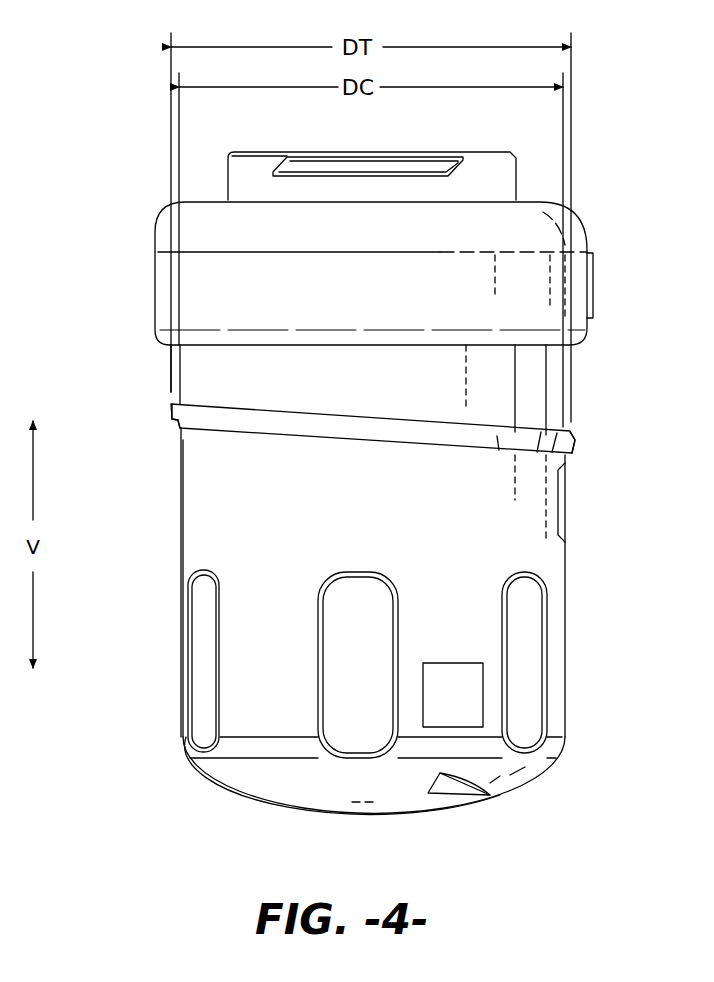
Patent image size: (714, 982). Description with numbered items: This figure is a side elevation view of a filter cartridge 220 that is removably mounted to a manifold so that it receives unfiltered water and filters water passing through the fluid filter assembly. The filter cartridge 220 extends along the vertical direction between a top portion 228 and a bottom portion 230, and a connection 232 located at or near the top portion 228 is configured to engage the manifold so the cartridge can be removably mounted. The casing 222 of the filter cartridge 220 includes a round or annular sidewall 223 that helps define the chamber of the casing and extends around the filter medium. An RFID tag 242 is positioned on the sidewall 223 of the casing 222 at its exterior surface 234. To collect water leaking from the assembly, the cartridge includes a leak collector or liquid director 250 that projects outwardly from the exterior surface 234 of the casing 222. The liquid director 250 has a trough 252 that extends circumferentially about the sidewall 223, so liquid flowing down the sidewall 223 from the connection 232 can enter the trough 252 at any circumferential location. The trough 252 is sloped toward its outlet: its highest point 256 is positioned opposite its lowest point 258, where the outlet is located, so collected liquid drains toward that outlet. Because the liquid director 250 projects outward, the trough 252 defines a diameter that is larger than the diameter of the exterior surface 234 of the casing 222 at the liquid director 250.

The filter cartridge 220 is at (127, 172).
The casing 222 is at (205, 364).
The sidewall 223 is at (565, 382).
The top portion 228 is at (540, 192).
The bottom portion 230 is at (568, 752).
The connection 232 is at (506, 147).
The exterior surface 234 is at (205, 492).
The RFID tag 242 is at (562, 505).
The liquid director 250 is at (178, 420).
The trough 252 is at (323, 420).
The highest point 256 is at (178, 430).
The lowest point 258 is at (572, 456).